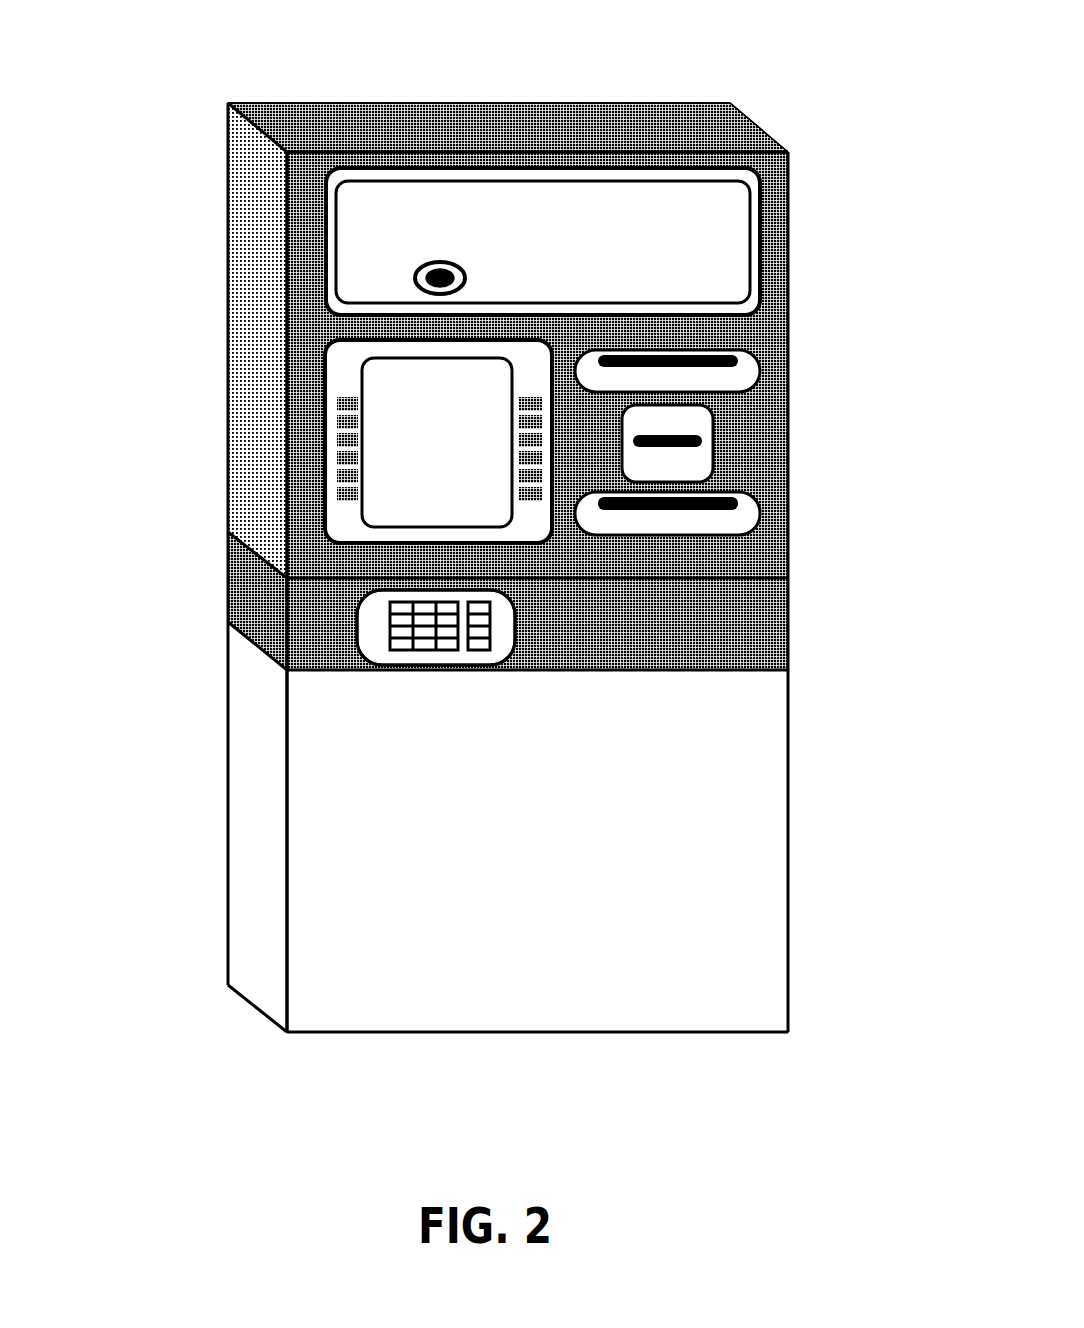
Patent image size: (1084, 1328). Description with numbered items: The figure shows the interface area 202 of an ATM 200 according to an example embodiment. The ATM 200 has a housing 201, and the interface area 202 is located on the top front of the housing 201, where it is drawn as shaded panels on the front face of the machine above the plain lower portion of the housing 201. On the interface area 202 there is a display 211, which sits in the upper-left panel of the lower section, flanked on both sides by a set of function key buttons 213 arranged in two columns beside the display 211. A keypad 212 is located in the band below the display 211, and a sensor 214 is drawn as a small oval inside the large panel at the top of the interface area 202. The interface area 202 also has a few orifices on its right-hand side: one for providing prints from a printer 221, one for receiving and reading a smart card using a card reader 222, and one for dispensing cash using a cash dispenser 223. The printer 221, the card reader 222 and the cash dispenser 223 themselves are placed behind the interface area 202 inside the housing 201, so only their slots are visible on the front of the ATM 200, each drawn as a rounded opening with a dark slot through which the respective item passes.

The ATM 200 is at (778, 127).
The housing 201 is at (685, 1005).
The interface area 202 is at (303, 192).
The display 211 is at (360, 527).
The keypad 212 is at (430, 657).
The function key buttons 213 is at (340, 423).
The sensor 214 is at (385, 286).
The printer 221 is at (772, 352).
The card reader 222 is at (753, 437).
The cash dispenser 223 is at (763, 513).